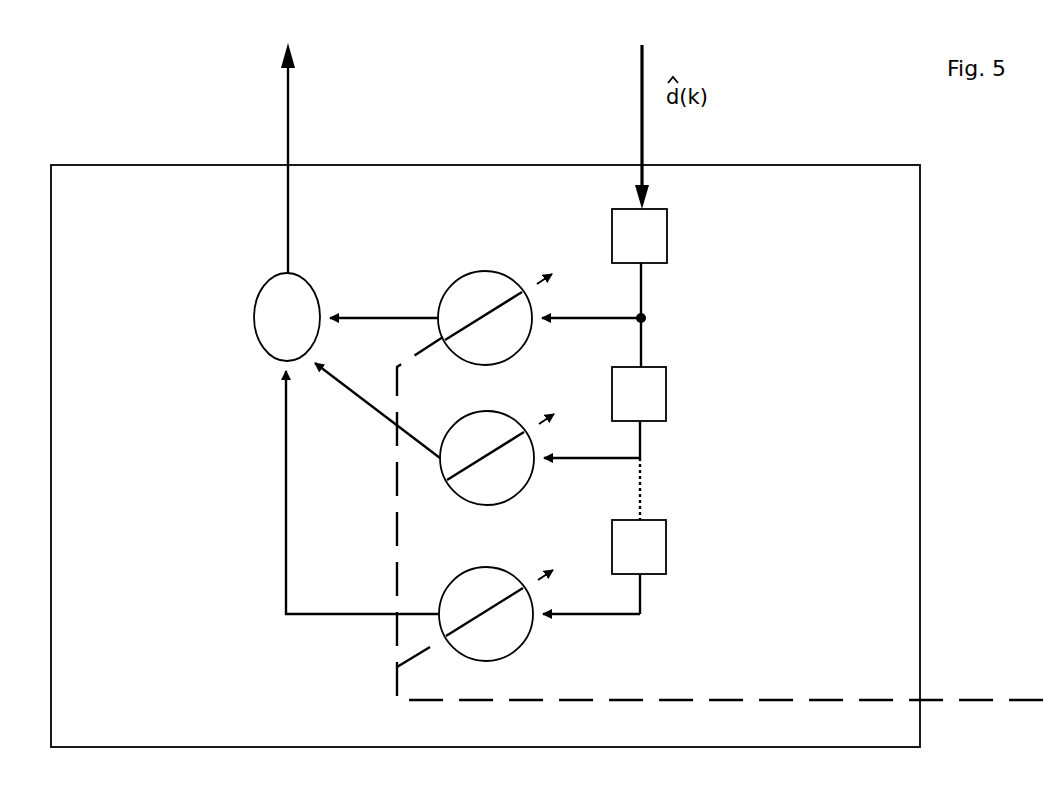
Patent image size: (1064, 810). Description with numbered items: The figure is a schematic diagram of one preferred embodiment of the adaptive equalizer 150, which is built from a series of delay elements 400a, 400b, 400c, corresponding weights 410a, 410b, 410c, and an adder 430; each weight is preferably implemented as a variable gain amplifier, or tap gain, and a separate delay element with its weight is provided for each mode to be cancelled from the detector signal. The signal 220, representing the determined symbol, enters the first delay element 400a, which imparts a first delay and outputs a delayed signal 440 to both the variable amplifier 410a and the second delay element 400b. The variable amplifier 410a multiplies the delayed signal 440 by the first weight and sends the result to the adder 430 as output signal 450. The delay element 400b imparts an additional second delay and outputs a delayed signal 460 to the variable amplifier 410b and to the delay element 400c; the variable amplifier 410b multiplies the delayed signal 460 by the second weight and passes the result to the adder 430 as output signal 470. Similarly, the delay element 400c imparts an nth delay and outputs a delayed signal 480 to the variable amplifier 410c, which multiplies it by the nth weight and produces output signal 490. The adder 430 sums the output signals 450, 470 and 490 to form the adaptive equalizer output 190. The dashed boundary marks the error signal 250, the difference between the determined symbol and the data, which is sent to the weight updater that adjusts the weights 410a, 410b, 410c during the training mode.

The adaptive equalizer 150 is at (752, 165).
The adaptive equalizer output 190 is at (288, 125).
The signal 220 is at (640, 133).
The error signal 250 is at (948, 702).
The delay element 400a is at (667, 240).
The delay element 400b is at (666, 398).
The delay element 400c is at (666, 550).
The variable amplifier 410a is at (485, 271).
The variable amplifier 410b is at (487, 412).
The variable amplifier 410c is at (486, 567).
The adder 430 is at (254, 307).
The delayed signal 440 is at (643, 293).
The output signal 450 is at (357, 316).
The delayed signal 460 is at (643, 445).
The output signal 470 is at (360, 403).
The delayed signal 480 is at (618, 617).
The output signal 490 is at (283, 585).